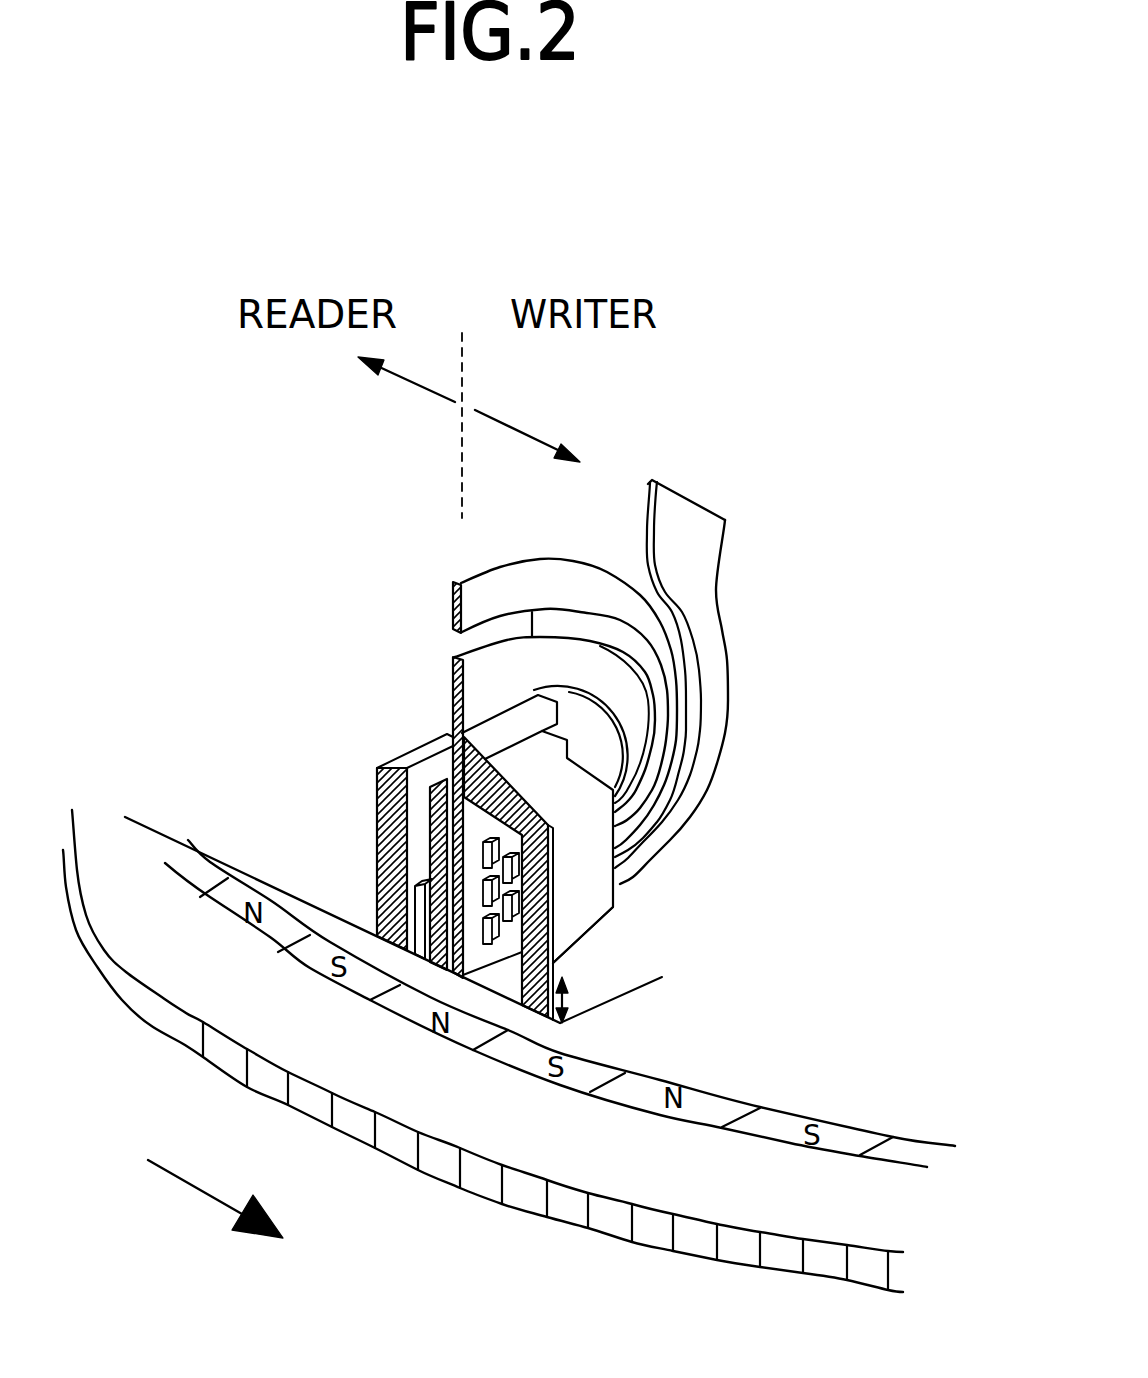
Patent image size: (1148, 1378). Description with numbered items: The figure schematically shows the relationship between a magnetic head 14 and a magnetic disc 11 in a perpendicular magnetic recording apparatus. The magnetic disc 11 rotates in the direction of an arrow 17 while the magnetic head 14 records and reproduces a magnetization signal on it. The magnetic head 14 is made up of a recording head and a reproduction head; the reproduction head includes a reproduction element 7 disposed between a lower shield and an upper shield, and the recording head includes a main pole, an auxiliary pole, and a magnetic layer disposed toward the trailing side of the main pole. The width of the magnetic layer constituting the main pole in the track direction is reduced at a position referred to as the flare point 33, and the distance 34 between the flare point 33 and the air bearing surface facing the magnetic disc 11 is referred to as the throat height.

The reproduction element 7 is at (417, 910).
The magnetic disc 11 is at (570, 1160).
The magnetic head 14 is at (824, 654).
The arrow 17 is at (215, 1208).
The flare point 33 is at (553, 962).
The distance 34 is at (556, 999).